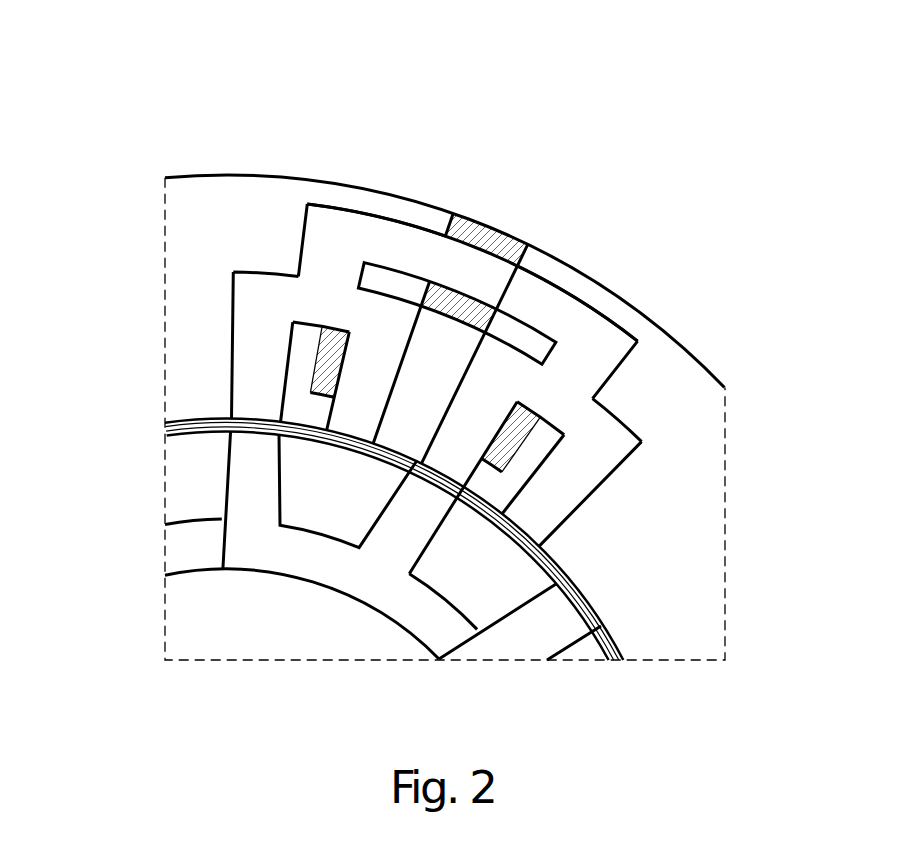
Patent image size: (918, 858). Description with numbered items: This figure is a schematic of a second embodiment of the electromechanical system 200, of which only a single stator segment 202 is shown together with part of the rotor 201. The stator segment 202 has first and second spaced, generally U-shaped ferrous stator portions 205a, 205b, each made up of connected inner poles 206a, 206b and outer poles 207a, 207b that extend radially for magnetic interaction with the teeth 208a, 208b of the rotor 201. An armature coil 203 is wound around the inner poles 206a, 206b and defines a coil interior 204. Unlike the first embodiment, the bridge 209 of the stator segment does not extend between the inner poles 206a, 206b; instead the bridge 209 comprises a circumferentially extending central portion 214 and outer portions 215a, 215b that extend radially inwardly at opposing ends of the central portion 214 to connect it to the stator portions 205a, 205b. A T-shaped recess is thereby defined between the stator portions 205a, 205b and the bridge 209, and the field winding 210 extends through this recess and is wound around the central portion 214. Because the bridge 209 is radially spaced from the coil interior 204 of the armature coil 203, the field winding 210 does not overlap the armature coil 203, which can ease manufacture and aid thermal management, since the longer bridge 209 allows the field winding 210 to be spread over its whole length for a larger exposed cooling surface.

The electromechanical system 200 is at (293, 126).
The rotor 201 is at (148, 547).
The stator segment 202 is at (194, 206).
The armature coil 203 is at (312, 367).
The coil interior 204 is at (403, 442).
The first stator portion 205a is at (322, 275).
The second stator portion 205b is at (570, 345).
The inner pole 206a is at (385, 320).
The inner pole 206b is at (492, 367).
The outer pole 207a is at (243, 324).
The outer pole 207b is at (553, 473).
The rotor tooth 208a is at (243, 457).
The rotor tooth 208b is at (413, 530).
The bridge 209 is at (383, 233).
The field winding 210 is at (481, 222).
The central portion 214 is at (372, 230).
The outer portion 215a is at (342, 235).
The outer portion 215b is at (553, 407).